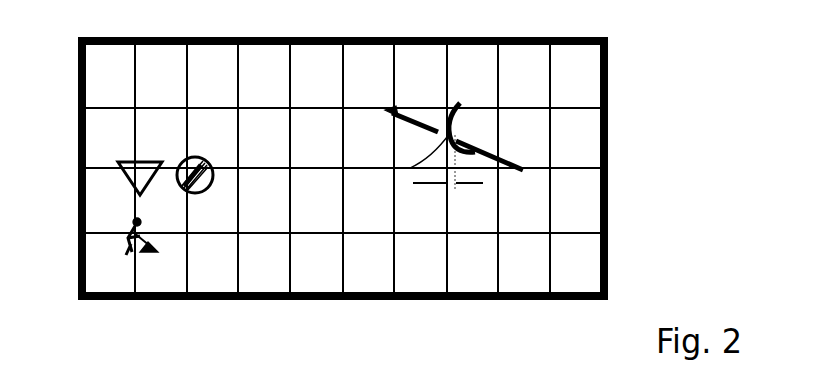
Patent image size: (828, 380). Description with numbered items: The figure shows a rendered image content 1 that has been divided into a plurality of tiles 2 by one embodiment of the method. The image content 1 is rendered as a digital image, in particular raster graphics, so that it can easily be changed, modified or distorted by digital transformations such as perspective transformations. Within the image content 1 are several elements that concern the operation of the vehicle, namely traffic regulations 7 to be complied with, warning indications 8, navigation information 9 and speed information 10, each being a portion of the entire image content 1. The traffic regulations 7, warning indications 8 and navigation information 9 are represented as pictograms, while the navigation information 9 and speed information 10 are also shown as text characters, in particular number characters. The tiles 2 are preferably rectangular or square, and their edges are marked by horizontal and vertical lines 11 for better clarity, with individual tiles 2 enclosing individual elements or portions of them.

The rendered image content 1 is at (118, 333).
The tiles 2 is at (207, 293).
The traffic regulations 7 is at (127, 178).
The warning indications 8 is at (128, 234).
The navigation information 9 is at (400, 109).
The speed information 10 is at (246, 64).
The horizontal and vertical lines 11 is at (316, 178).